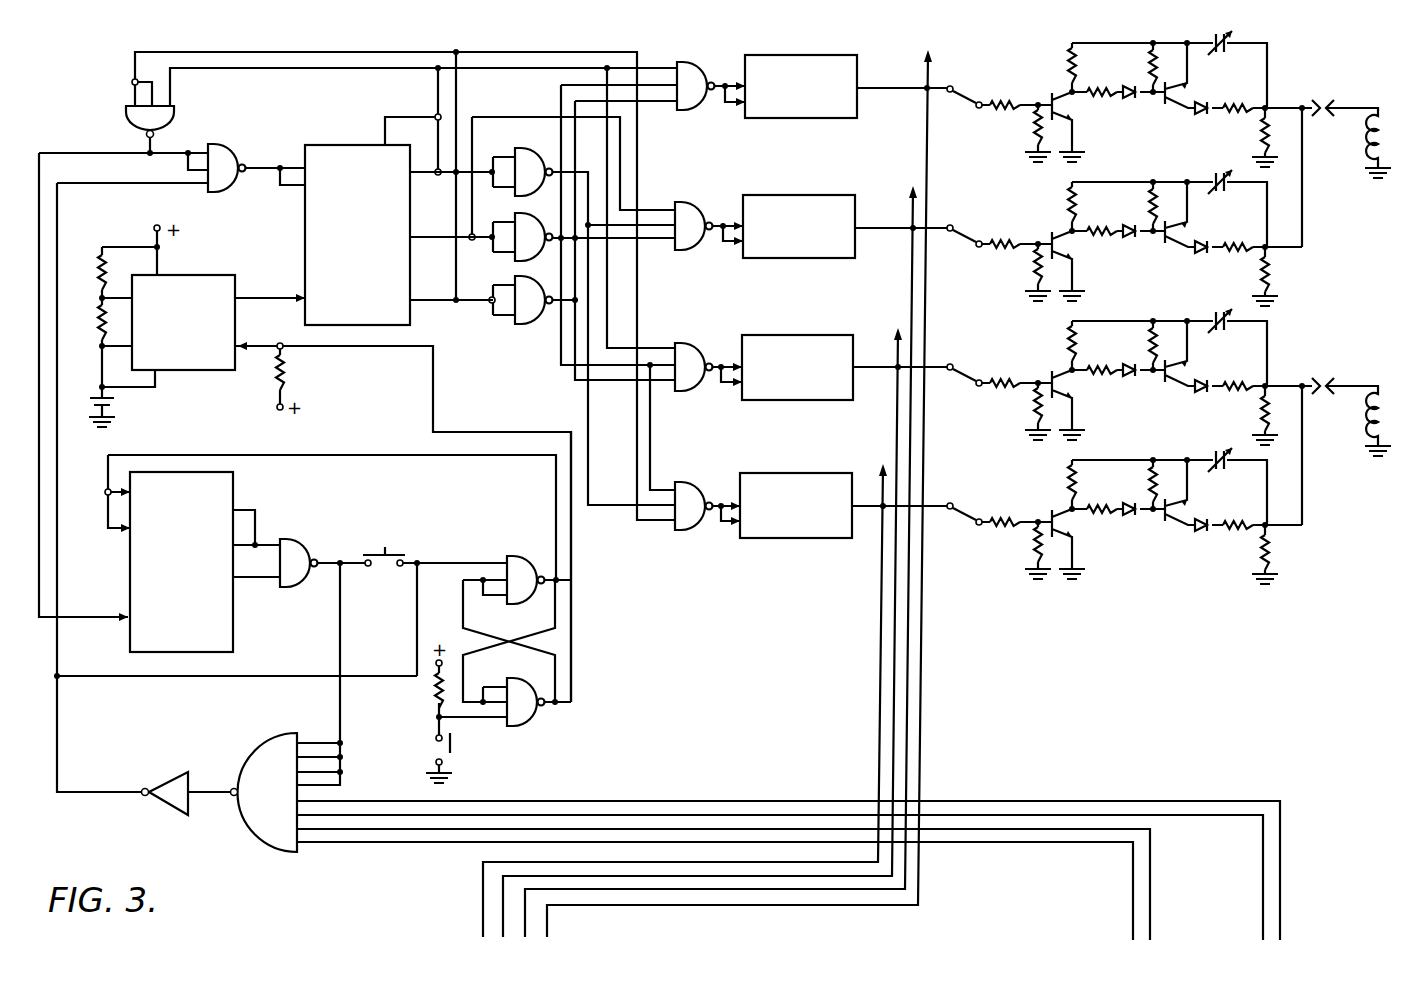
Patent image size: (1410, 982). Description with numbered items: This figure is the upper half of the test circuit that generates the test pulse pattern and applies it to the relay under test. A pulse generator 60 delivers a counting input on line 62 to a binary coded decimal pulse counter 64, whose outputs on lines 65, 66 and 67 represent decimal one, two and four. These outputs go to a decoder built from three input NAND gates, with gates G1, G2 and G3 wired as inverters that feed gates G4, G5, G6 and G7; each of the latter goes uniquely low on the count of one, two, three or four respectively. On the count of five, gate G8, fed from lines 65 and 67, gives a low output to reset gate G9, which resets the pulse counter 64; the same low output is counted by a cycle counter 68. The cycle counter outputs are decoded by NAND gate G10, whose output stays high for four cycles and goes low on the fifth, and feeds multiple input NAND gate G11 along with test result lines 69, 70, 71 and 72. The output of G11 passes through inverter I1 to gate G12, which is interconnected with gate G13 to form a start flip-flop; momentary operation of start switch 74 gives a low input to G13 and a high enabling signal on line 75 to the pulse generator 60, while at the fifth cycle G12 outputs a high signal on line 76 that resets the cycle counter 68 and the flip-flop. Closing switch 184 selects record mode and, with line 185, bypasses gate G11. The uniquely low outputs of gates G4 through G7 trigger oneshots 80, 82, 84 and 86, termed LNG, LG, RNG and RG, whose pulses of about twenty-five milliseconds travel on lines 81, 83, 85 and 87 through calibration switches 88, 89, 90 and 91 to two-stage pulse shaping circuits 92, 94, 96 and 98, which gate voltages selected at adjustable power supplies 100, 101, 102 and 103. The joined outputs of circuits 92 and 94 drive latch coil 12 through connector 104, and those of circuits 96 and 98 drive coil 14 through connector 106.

The latch coil 12 is at (1362, 150).
The latch coil 14 is at (1362, 430).
The pulse generator 60 is at (182, 275).
The line 62 is at (280, 297).
The binary coded decimal pulse counter 64 is at (330, 144).
The line 65 is at (440, 180).
The line 66 is at (440, 244).
The line 67 is at (414, 303).
The cycle counter 68 is at (233, 482).
The line 69 is at (1280, 920).
The line 70 is at (1263, 924).
The line 71 is at (1150, 920).
The line 72 is at (1133, 921).
The start switch 74 is at (450, 758).
The line 75 is at (571, 670).
The line 76 is at (556, 508).
The LNG oneshot 80 is at (790, 55).
The line 81 is at (876, 88).
The LG oneshot 82 is at (786, 195).
The line 83 is at (893, 212).
The RNG oneshot 84 is at (776, 335).
The line 85 is at (882, 366).
The RG oneshot 86 is at (788, 473).
The line 87 is at (868, 506).
The calibration switch 88 is at (962, 100).
The calibration switch 89 is at (960, 240).
The calibration switch 90 is at (962, 378).
The calibration switch 91 is at (960, 518).
The pulse shaping circuit 92 is at (1046, 74).
The pulse shaping circuit 94 is at (1046, 213).
The pulse shaping circuit 96 is at (1048, 362).
The pulse shaping circuit 98 is at (1048, 500).
The adjustable power supply 100 is at (1222, 56).
The adjustable power supply 101 is at (1222, 194).
The adjustable power supply 102 is at (1222, 334).
The adjustable power supply 103 is at (1220, 474).
The connector 104 is at (1318, 104).
The connector 106 is at (1318, 382).
The switch 184 is at (386, 546).
The line 185 is at (258, 675).
The NAND gate G1 is at (538, 148).
The NAND gate G2 is at (540, 220).
The NAND gate G3 is at (530, 327).
The NAND gate G4 is at (682, 63).
The NAND gate G5 is at (683, 203).
The NAND gate G6 is at (690, 344).
The NAND gate G7 is at (708, 474).
The gate G8 is at (126, 114).
The reset gate G9 is at (222, 148).
The NAND gate G10 is at (290, 540).
The multiple input NAND gate G11 is at (268, 735).
The gate G12 is at (536, 547).
The gate G13 is at (530, 722).
The inverter I1 is at (162, 782).